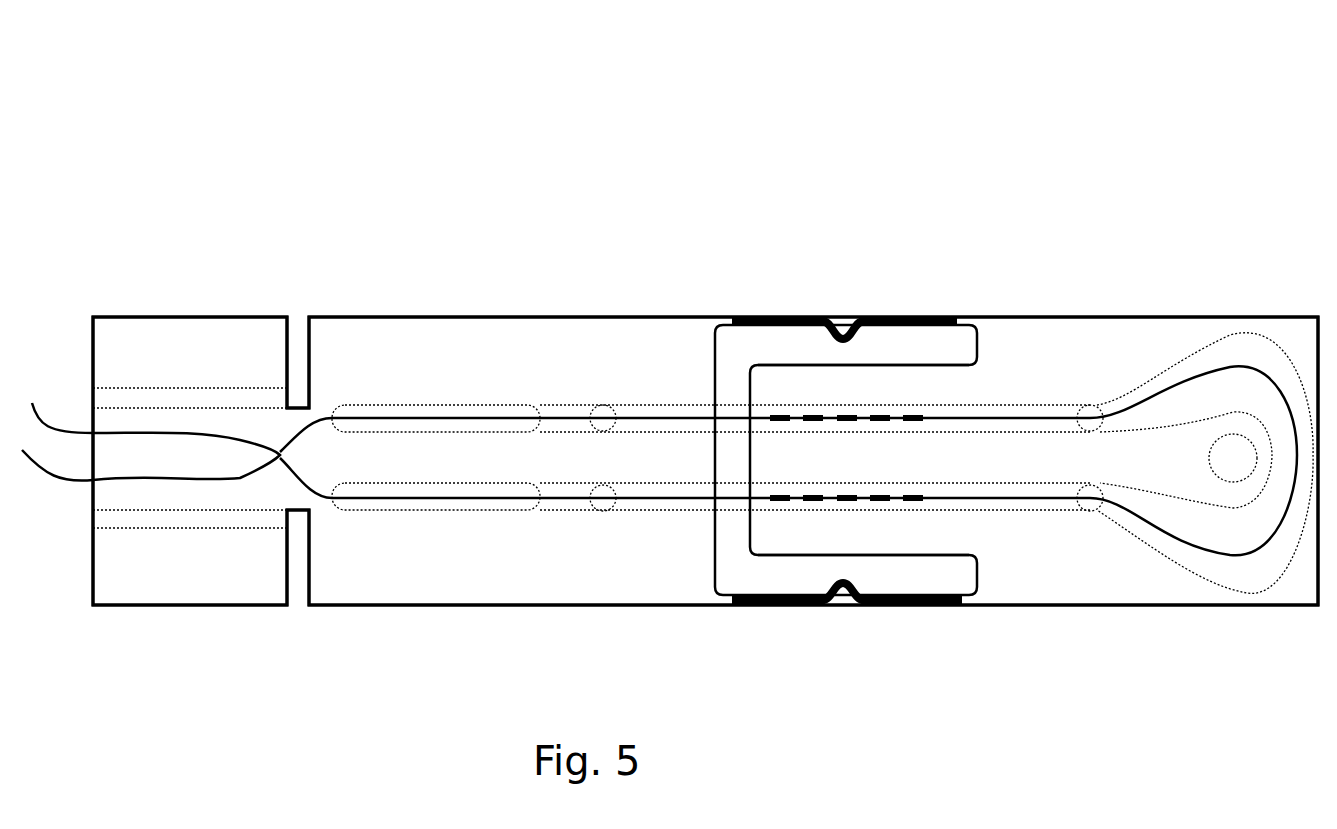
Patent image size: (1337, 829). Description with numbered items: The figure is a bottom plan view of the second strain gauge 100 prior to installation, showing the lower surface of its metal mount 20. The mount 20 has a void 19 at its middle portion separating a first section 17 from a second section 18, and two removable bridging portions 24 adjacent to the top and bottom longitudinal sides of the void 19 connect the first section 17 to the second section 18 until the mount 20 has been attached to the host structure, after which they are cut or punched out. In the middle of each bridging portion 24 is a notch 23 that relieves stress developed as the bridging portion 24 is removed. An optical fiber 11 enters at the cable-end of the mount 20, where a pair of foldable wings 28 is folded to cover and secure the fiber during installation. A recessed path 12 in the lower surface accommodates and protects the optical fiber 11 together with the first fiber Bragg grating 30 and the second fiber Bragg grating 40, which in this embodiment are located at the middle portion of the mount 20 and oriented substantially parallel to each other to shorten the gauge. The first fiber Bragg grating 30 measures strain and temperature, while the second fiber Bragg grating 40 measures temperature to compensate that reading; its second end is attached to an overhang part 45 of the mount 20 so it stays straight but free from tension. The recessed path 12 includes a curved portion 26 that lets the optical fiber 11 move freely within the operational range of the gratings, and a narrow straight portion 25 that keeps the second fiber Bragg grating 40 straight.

The second strain gauge 100 is at (1140, 163).
The mount 20 is at (410, 317).
The foldable wings 28 is at (232, 557).
The optical fiber 11 is at (642, 340).
The first section 17 is at (436, 457).
The second section 18 is at (1205, 463).
The recessed path 12 is at (1095, 508).
The curved portion 26 is at (1305, 340).
The void 19 is at (752, 340).
The bridging portions 24 is at (797, 315).
The notch 23 is at (843, 330).
The first fiber Bragg grating 30 is at (877, 415).
The second fiber Bragg grating 40 is at (918, 503).
The overhang part 45 is at (938, 392).
The narrow straight portion 25 is at (973, 510).